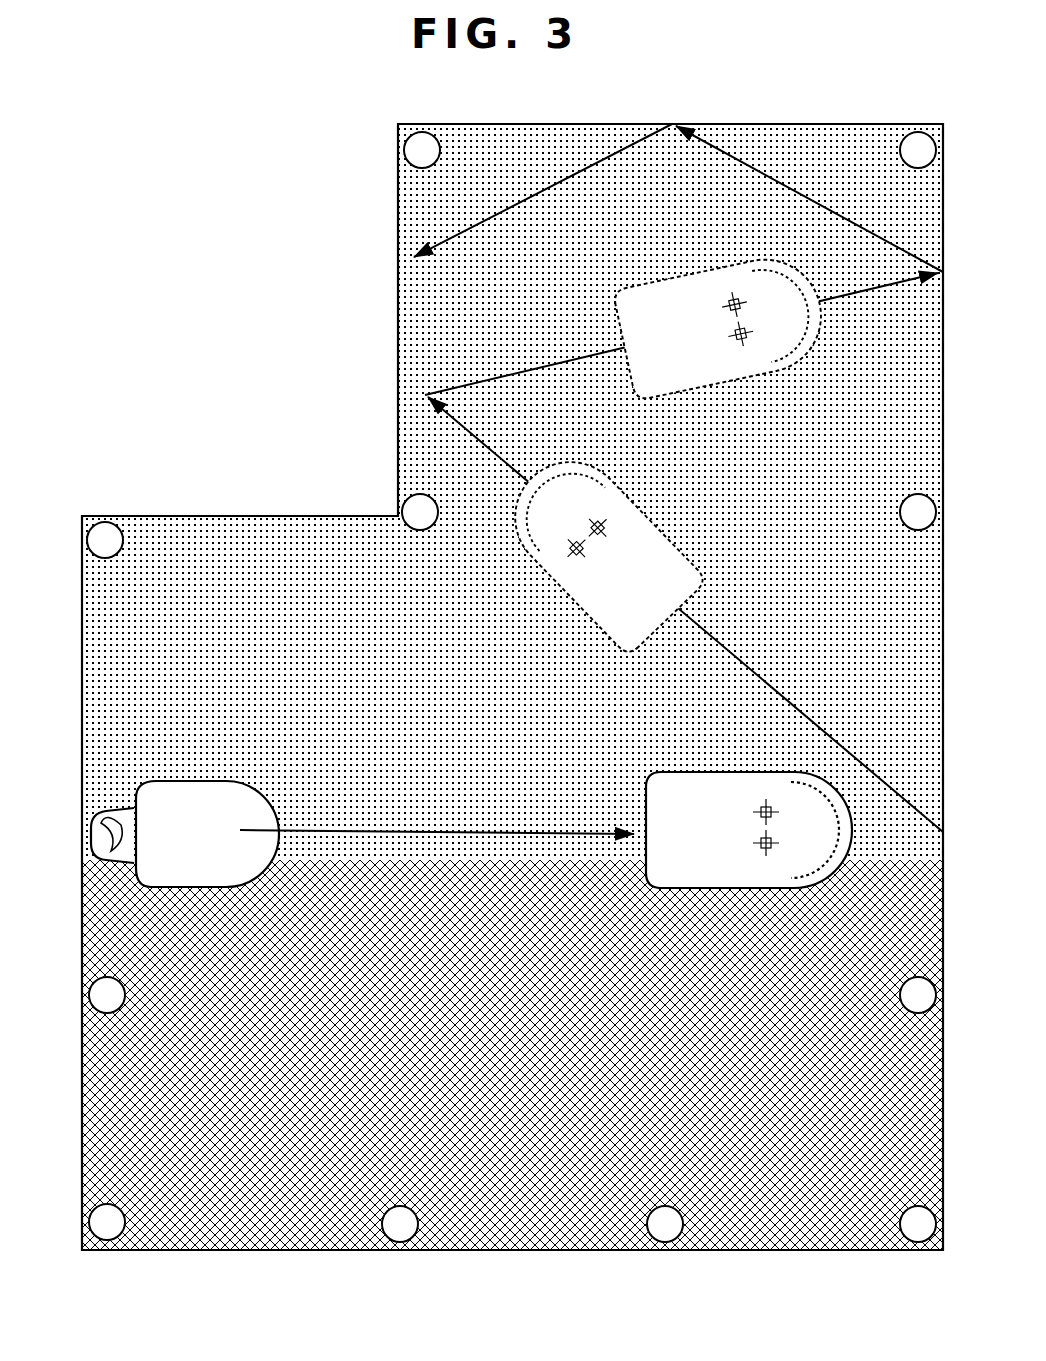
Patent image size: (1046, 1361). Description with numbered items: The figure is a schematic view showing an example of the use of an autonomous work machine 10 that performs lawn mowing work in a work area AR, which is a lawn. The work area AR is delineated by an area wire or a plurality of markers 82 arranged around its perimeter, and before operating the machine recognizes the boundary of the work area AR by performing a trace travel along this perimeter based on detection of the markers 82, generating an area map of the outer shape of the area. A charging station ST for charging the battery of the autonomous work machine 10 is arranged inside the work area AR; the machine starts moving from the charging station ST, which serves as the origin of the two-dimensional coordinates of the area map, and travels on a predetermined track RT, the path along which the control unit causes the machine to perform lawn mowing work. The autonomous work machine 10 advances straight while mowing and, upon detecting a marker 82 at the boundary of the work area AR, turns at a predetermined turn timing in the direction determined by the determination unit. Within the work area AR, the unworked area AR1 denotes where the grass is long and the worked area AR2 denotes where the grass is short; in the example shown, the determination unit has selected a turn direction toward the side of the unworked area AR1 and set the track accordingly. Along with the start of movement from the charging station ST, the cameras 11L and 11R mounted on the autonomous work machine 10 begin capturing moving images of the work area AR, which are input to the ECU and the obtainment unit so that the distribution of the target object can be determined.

The work area AR is at (512, 690).
The unworked area AR1 is at (515, 140).
The worked area AR2 is at (208, 1242).
The marker 82 is at (105, 540).
The charging station ST is at (187, 780).
The track RT is at (442, 828).
The autonomous work machine 10 is at (749, 830).
The camera 11L is at (760, 809).
The camera 11R is at (760, 845).